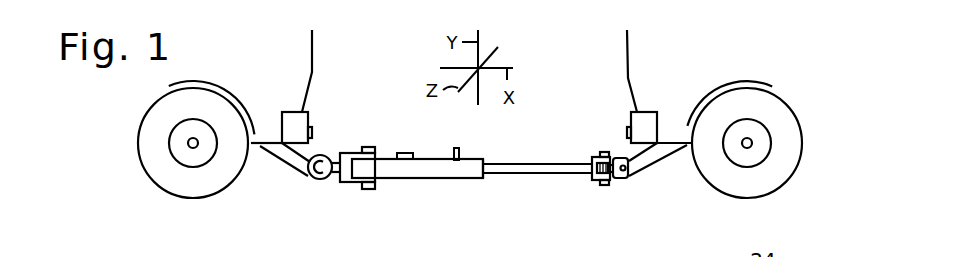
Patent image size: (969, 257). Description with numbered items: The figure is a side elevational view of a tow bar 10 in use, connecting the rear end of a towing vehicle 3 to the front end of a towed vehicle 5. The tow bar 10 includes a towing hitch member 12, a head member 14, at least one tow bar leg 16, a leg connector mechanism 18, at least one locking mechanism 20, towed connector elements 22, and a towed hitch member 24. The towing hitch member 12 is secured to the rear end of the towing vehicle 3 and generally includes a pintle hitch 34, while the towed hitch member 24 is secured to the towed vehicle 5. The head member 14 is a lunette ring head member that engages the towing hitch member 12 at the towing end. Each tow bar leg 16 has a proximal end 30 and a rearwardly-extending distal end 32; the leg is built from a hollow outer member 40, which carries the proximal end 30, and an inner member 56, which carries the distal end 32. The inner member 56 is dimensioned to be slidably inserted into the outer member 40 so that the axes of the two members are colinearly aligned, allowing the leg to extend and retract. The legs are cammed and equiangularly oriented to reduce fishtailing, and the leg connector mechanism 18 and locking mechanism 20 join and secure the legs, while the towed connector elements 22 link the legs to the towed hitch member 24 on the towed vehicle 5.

The towing vehicle 3 is at (282, 67).
The towed vehicle 5 is at (669, 67).
The tow bar 10 is at (799, 63).
The towing hitch member 12 is at (274, 164).
The head member 14 is at (335, 194).
The tow bar leg 16 is at (543, 184).
The leg connector mechanism 18 is at (367, 142).
The locking mechanism 20 is at (455, 150).
The towed connector elements 22 is at (609, 188).
The towed hitch member 24 is at (660, 173).
The proximal end 30 is at (383, 172).
The distal end 32 is at (591, 163).
The pintle hitch 34 is at (315, 178).
The hollow outer member 40 is at (473, 181).
The inner member 56 is at (527, 163).